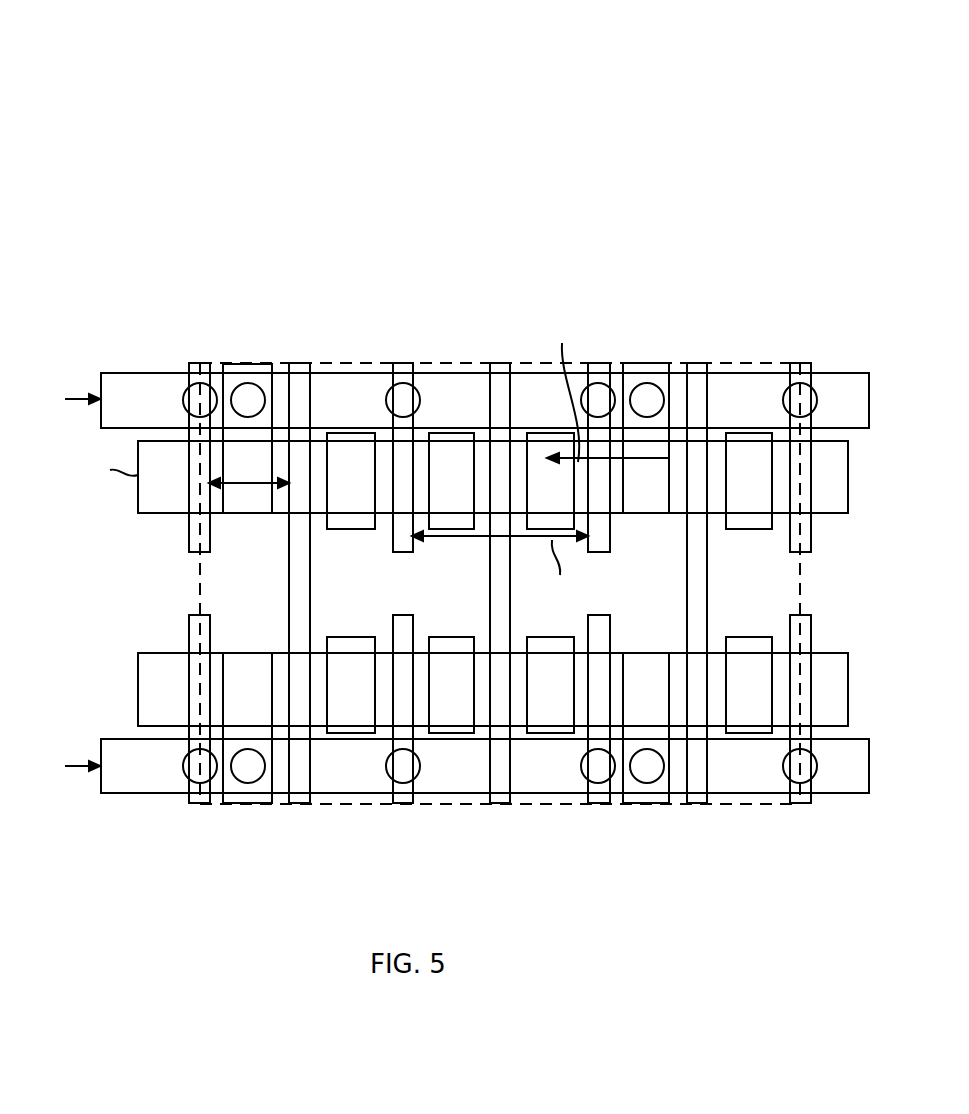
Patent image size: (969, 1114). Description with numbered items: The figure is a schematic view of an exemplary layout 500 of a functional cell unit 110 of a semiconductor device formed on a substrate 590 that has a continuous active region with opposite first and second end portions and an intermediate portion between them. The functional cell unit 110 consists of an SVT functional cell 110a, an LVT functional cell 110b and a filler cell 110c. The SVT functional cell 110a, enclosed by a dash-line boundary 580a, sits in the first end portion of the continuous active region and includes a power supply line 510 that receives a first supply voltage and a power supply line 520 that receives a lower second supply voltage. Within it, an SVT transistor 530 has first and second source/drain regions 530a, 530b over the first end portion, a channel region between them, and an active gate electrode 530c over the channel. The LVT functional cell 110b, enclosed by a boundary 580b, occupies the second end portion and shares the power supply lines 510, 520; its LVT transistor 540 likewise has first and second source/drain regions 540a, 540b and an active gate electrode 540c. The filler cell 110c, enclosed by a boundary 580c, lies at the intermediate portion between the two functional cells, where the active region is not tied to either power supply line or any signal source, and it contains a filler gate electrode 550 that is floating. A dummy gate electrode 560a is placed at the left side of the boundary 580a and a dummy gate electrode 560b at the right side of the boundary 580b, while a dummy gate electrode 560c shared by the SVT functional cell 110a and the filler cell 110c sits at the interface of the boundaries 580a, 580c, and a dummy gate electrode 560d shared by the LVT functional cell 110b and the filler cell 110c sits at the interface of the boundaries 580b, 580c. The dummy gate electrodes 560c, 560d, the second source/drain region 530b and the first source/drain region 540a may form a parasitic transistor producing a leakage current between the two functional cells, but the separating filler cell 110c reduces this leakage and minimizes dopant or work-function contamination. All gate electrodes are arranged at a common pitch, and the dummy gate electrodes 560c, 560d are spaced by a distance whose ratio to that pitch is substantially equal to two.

The layout 500 is at (869, 895).
The power supply line 510 is at (132, 387).
The power supply line 520 is at (127, 780).
The functional cell unit 110 is at (705, 264).
The SVT functional cell 110a is at (280, 356).
The LVT functional cell 110b is at (693, 356).
The filler cell 110c is at (527, 356).
The SVT transistor 530 is at (810, 12).
The first source/drain region 530a is at (282, 514).
The second source/drain region 530b is at (320, 514).
The active gate electrode 530c is at (298, 623).
The LVT transistor 540 is at (810, 135).
The first source/drain region 540a is at (677, 514).
The second source/drain region 540b is at (713, 514).
The active gate electrode 540c is at (697, 634).
The filler gate electrode 550 is at (505, 543).
The dummy gate electrode 560a is at (189, 534).
The dummy gate electrode 560b is at (805, 533).
The dummy gate electrode 560c is at (410, 540).
The dummy gate electrode 560d is at (604, 540).
The boundary 580a is at (243, 807).
The boundary 580b is at (710, 806).
The boundary 580c is at (525, 806).
The substrate 590 is at (215, 581).